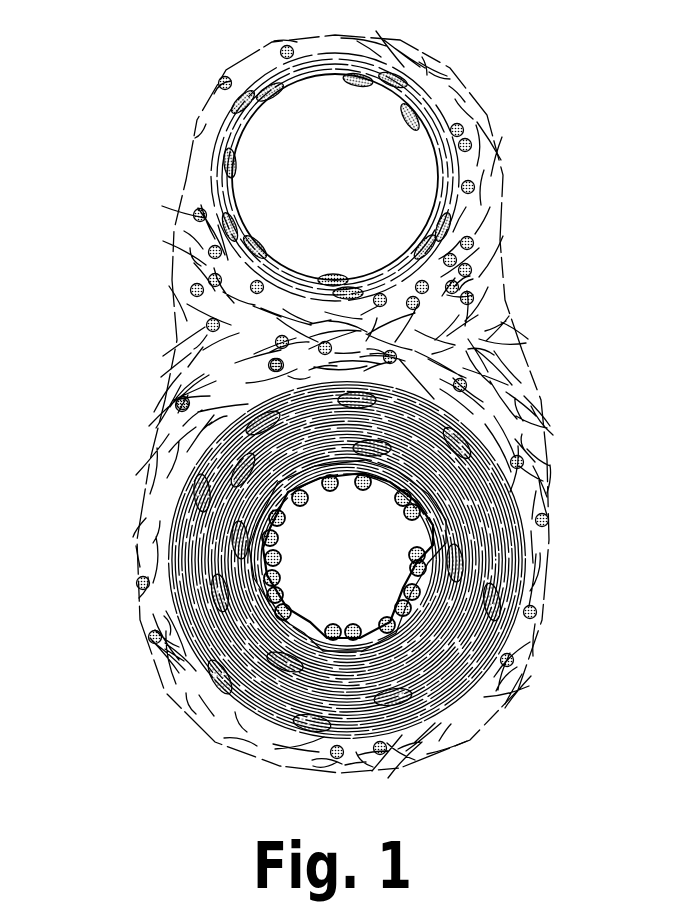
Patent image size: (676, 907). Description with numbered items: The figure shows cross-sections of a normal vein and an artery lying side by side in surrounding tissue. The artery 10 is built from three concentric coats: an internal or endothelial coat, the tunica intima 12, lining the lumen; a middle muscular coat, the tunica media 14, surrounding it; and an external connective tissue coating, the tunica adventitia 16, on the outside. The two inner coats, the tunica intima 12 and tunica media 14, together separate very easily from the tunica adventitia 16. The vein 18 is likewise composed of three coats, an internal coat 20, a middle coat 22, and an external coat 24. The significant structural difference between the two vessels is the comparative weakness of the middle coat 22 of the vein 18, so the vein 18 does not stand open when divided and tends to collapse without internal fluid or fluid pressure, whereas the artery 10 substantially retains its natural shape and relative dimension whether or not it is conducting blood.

The artery 10 is at (490, 470).
The tunica intima 12 is at (273, 513).
The tunica media 14 is at (267, 442).
The tunica adventitia 16 is at (163, 655).
The vein 18 is at (413, 153).
The internal coat 20 is at (433, 190).
The middle coat 22 is at (472, 205).
The external coat 24 is at (472, 216).